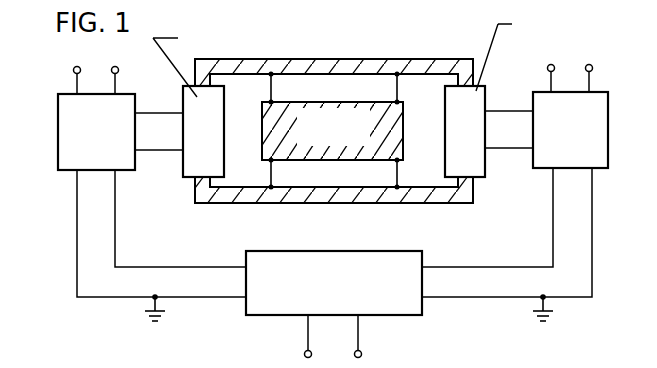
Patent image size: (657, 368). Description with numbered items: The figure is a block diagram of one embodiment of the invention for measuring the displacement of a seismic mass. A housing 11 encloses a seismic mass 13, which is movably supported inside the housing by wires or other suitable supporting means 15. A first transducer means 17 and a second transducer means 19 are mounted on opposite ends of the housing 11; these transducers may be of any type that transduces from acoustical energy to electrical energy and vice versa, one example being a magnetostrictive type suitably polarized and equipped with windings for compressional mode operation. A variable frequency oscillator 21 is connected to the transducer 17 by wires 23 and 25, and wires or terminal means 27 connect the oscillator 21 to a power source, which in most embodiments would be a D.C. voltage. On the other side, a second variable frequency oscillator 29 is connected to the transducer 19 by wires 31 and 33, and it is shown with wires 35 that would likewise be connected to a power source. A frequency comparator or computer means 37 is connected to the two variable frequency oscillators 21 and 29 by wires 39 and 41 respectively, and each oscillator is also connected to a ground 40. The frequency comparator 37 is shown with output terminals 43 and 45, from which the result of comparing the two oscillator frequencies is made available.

The housing 11 is at (420, 59).
The seismic mass 13 is at (264, 128).
The supporting means 15 is at (272, 91).
The first transducer means 17 is at (196, 134).
The second transducer means 19 is at (457, 134).
The variable frequency oscillator 21 is at (58, 117).
The wire 23 is at (149, 113).
The wire 25 is at (149, 150).
The terminal means 27 is at (108, 48).
The second variable frequency oscillator 29 is at (606, 129).
The wire 31 is at (494, 111).
The wire 33 is at (494, 148).
The wires 35 is at (583, 47).
The frequency comparator 37 is at (316, 250).
The wire 39 is at (164, 267).
The ground 40 is at (153, 301).
The wire 41 is at (469, 267).
The output terminal 43 is at (305, 350).
The output terminal 45 is at (361, 350).